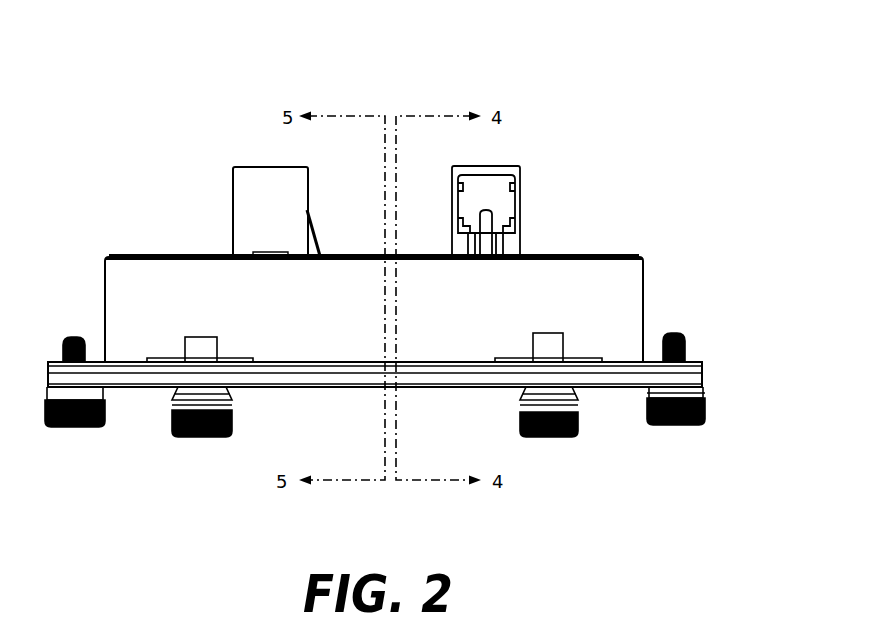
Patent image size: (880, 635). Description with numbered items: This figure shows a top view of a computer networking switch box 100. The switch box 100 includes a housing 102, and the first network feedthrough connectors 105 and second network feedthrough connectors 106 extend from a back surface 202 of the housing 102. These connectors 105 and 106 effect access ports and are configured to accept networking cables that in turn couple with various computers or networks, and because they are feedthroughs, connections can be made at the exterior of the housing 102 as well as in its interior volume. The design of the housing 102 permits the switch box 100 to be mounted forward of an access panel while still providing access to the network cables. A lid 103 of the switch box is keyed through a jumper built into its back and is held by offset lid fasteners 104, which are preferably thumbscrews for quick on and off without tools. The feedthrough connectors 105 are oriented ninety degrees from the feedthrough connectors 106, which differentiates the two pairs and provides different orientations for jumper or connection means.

The switch box 100 is at (107, 127).
The housing 102 is at (645, 303).
The back surface 202 is at (596, 252).
The lid 103 is at (360, 387).
The lid fasteners 104 is at (172, 432).
The first network feedthrough connectors 105 is at (517, 181).
The second network feedthrough connectors 106 is at (233, 208).